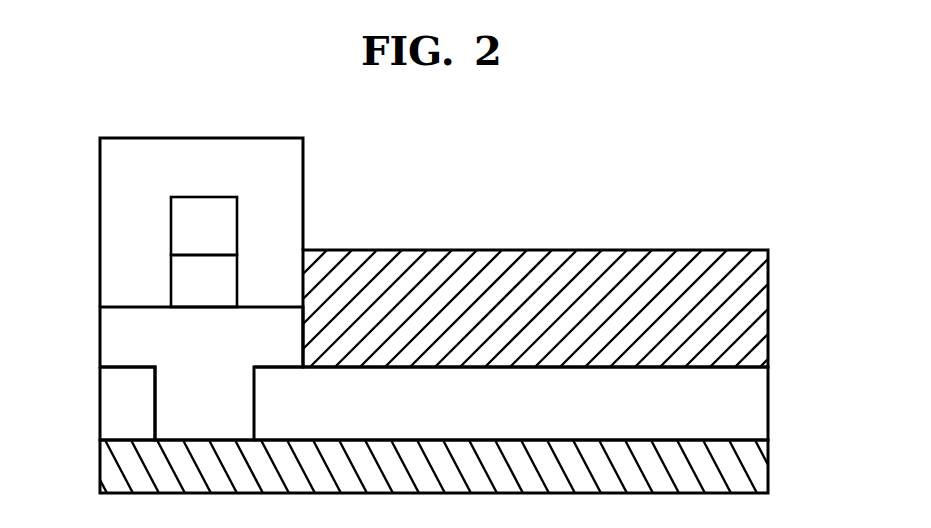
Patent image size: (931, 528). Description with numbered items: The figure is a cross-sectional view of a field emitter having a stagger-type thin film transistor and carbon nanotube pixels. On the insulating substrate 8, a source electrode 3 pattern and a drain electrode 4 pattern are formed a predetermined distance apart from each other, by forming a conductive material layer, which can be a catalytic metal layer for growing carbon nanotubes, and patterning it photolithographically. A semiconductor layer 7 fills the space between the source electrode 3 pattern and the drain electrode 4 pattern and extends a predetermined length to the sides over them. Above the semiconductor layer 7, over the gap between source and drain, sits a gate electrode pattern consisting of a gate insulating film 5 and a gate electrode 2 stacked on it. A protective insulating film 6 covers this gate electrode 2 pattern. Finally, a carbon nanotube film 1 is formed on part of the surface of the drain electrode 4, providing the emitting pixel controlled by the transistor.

The carbon nanotube film 1 is at (768, 265).
The gate electrode 2 is at (171, 218).
The source electrode 3 is at (105, 407).
The drain electrode 4 is at (764, 400).
The gate insulating film 5 is at (171, 270).
The protective insulating film 6 is at (100, 154).
The semiconductor layer 7 is at (110, 328).
The insulating substrate 8 is at (764, 468).